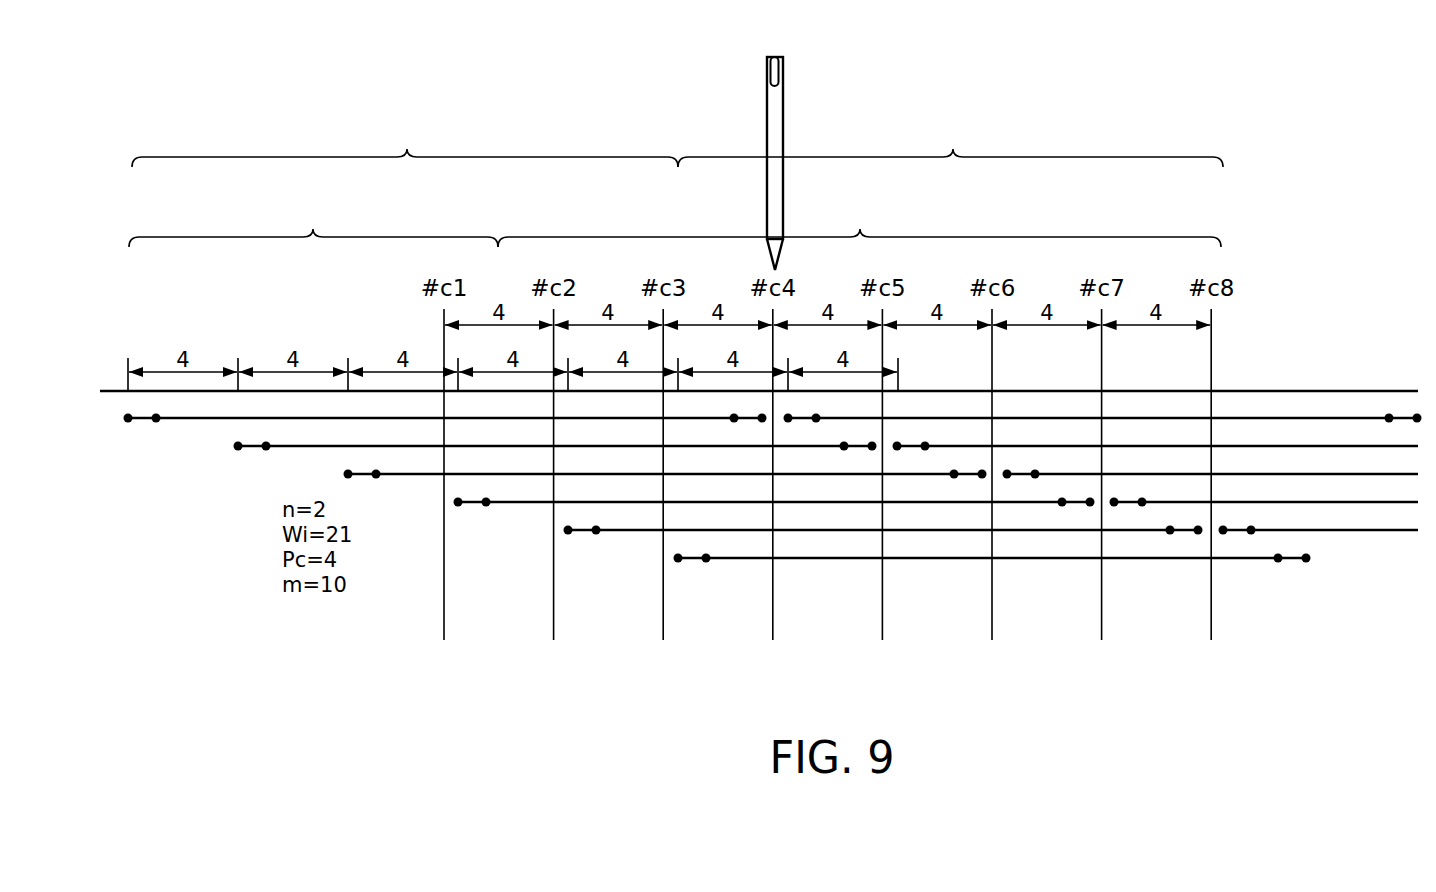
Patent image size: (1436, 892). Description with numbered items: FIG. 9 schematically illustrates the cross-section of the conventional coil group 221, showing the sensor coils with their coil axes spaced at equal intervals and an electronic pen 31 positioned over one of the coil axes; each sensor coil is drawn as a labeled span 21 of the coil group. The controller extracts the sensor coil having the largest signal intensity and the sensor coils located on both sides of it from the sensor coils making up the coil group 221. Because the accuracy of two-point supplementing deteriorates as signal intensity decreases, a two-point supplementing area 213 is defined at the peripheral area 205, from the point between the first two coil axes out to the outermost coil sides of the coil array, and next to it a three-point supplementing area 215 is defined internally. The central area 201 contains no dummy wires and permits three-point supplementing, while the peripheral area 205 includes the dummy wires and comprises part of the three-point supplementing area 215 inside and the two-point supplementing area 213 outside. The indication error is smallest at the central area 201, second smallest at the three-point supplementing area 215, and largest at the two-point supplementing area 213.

The electronic pen 31 is at (773, 57).
The peripheral area 205 is at (405, 144).
The central area 201 is at (950, 144).
The two-point supplementing area 213 is at (313, 224).
The three-point supplementing area 215 is at (859, 223).
The coil group 221 is at (1238, 373).
The detection window 21 is at (773, 488).